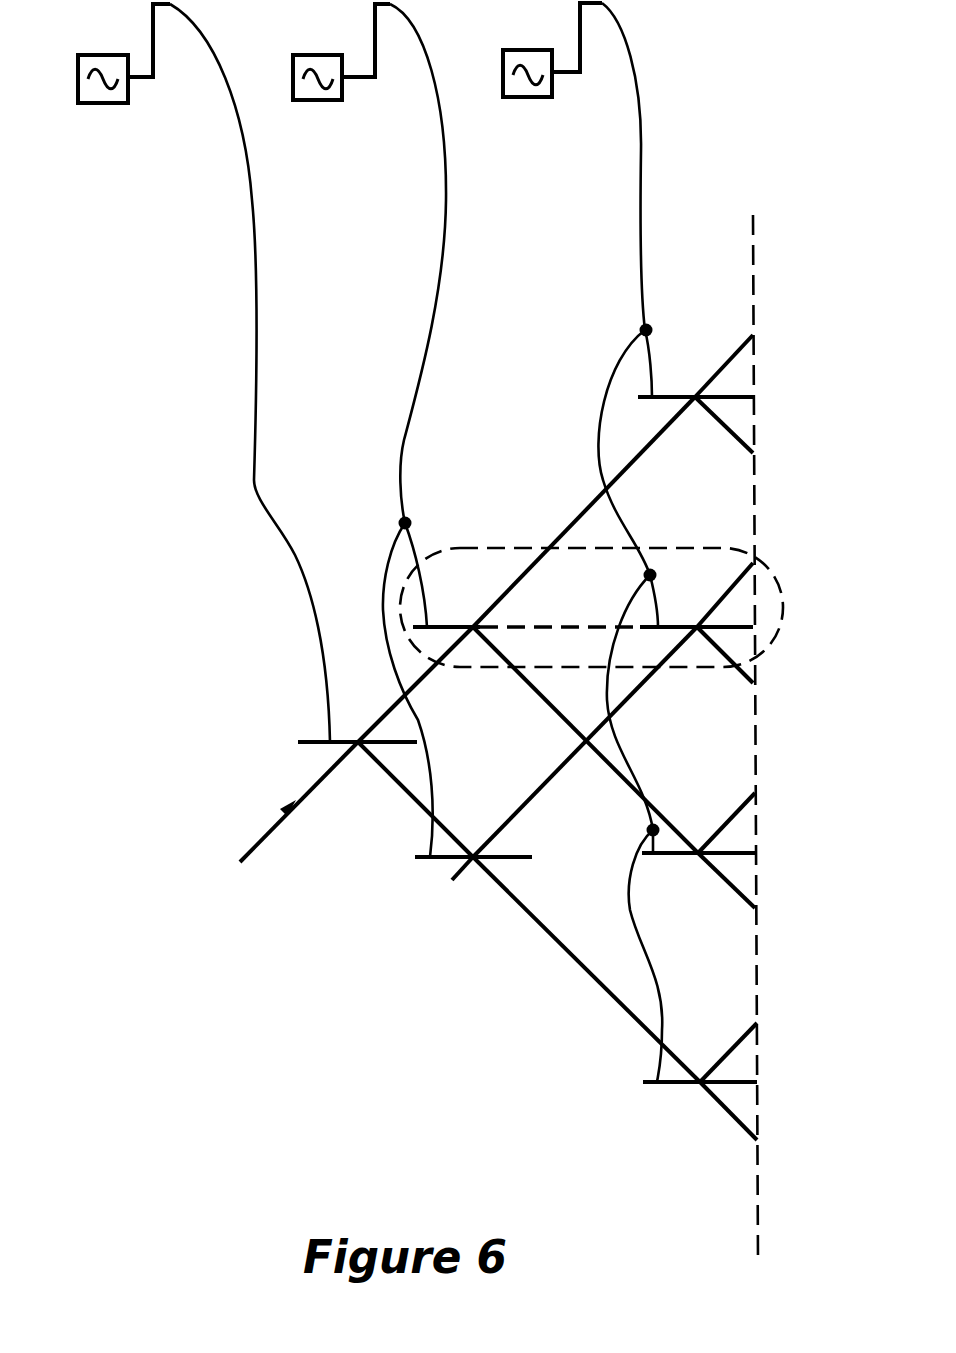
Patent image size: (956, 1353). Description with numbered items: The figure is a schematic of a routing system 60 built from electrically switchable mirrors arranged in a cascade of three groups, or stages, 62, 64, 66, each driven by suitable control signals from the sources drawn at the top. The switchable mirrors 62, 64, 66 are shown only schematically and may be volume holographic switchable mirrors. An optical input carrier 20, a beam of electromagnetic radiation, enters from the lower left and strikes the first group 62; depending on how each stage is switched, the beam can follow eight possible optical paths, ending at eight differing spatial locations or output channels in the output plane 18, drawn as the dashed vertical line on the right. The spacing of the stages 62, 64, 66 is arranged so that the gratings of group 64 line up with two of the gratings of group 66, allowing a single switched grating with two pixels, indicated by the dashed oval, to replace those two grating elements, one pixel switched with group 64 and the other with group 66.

The output plane 18 is at (760, 1208).
The optical input carrier 20 is at (252, 848).
The routing system 60 is at (432, 963).
The first group of switchable mirrors 62 is at (313, 740).
The second group of switchable mirrors 64 is at (449, 627).
The third group of switchable mirrors 66 is at (672, 397).